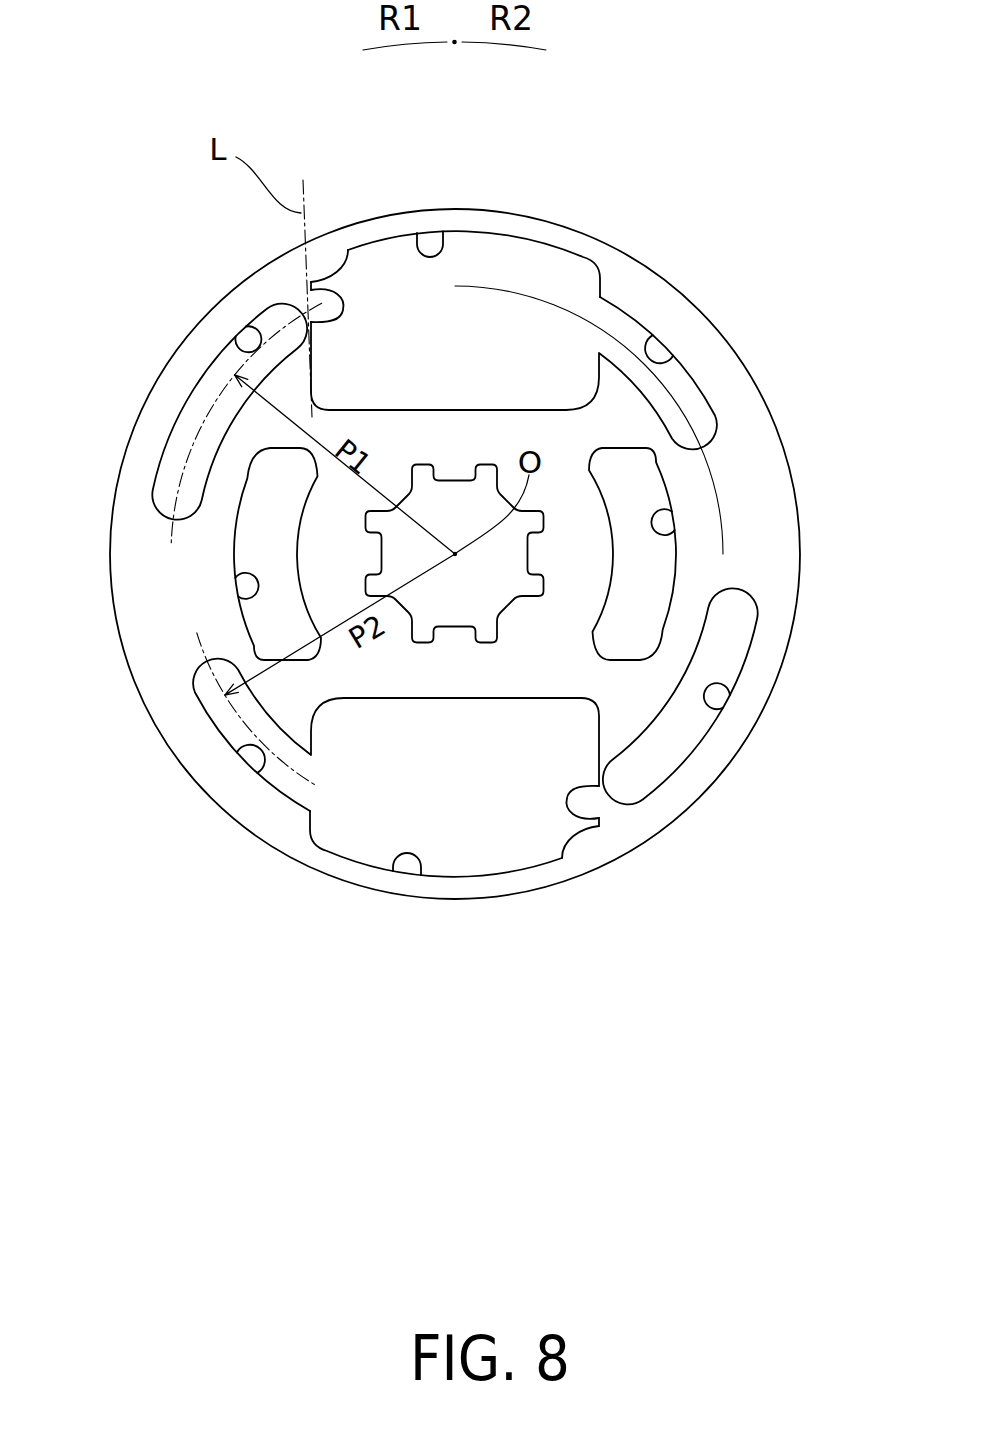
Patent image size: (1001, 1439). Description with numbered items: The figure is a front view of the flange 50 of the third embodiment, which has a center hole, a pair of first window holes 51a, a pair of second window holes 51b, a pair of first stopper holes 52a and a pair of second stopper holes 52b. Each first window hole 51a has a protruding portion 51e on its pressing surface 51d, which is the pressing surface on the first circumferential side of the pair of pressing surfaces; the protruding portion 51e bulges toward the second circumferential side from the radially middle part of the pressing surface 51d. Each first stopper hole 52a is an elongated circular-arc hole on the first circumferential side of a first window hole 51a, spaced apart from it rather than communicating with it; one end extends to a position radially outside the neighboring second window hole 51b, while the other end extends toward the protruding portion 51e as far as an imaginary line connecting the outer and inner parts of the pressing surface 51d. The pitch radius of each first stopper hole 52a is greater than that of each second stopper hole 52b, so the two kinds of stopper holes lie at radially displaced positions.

The flange 50 is at (151, 666).
The first window hole 51a is at (423, 232).
The second window hole 51b is at (676, 533).
The pressing surface 51d is at (347, 250).
The protruding portion 51e is at (305, 284).
The first stopper hole 52a is at (235, 345).
The second stopper hole 52b is at (668, 358).